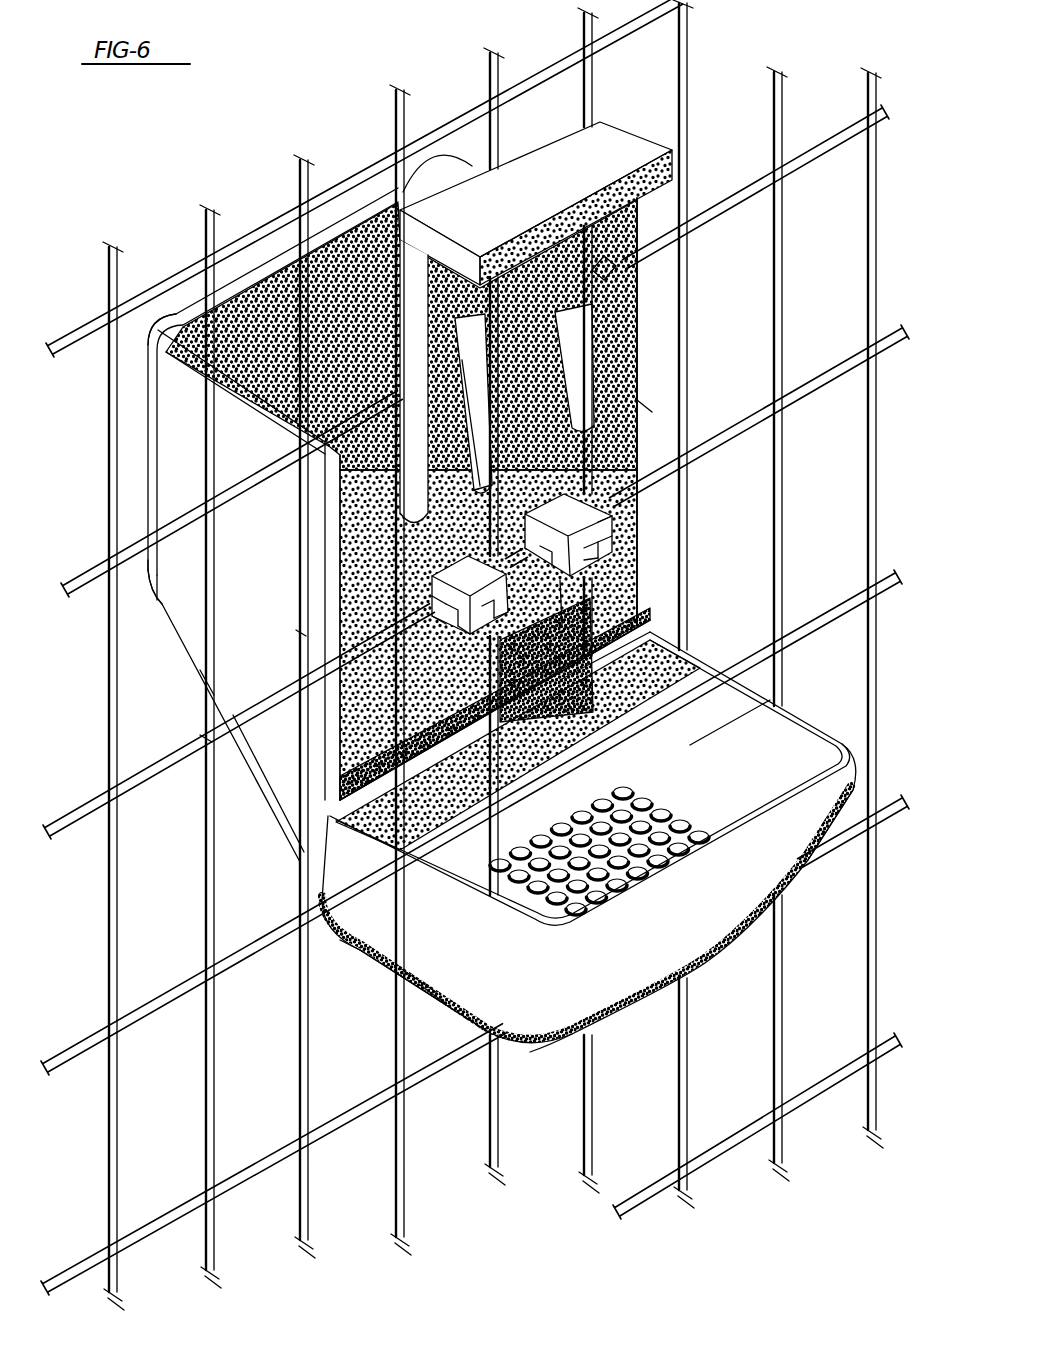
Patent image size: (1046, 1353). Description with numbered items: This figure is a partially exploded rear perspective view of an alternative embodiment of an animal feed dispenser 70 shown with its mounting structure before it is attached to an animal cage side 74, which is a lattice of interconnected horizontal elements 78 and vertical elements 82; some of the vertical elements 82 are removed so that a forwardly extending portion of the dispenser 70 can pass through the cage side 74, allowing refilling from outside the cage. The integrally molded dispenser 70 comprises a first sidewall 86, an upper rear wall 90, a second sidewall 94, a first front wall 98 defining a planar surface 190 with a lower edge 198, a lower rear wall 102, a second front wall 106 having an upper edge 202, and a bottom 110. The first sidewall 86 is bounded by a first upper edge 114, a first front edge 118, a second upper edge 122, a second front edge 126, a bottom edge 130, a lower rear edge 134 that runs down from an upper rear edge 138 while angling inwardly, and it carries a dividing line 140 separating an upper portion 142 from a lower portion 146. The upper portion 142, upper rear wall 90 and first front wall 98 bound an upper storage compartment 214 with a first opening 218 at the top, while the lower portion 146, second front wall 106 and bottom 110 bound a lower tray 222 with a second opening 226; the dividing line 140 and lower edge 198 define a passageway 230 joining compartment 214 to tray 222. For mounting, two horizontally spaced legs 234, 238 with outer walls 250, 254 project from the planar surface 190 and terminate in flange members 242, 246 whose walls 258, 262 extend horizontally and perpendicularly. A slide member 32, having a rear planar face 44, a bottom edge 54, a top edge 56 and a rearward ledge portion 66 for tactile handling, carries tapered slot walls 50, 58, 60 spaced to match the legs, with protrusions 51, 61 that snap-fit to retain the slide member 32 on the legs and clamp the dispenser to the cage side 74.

The slide member 32 is at (386, 184).
The rear planar face 44 is at (532, 382).
The wall 50 is at (452, 578).
The protrusion 51 is at (480, 362).
The bottom edge 54 is at (498, 490).
The top edge 56 is at (488, 180).
The wall 58 is at (576, 500).
The wall 60 is at (590, 335).
The protrusion 61 is at (608, 266).
The ledge portion 66 is at (624, 146).
The animal feed dispenser 70 is at (666, 357).
The animal cage side 74 is at (704, 200).
The horizontal elements 78 is at (82, 336).
The vertical elements 82 is at (580, 14).
The first sidewall 86 is at (287, 768).
The upper rear wall 90 is at (152, 342).
The second sidewall 94 is at (652, 412).
The first front wall 98 is at (316, 634).
The lower rear wall 102 is at (158, 622).
The second front wall 106 is at (722, 938).
The bottom 110 is at (442, 1010).
The first upper edge 114 is at (212, 330).
The first front edge 118 is at (322, 553).
The second upper edge 122 is at (470, 881).
The second front edge 126 is at (560, 1042).
The bottom edge 130 is at (358, 960).
The lower rear edge 134 is at (228, 750).
The upper rear edge 138 is at (130, 544).
The dividing line 140 is at (212, 693).
The upper portion 142 is at (268, 595).
The lower portion 146 is at (496, 965).
The planar surface 190 is at (388, 541).
The lower edge 198 is at (668, 640).
The upper edge 202 is at (820, 757).
The upper storage compartment 214 is at (141, 453).
The first opening 218 is at (260, 262).
The lower tray 222 is at (422, 975).
The second opening 226 is at (716, 720).
The passageway 230 is at (388, 805).
The leg 234 is at (440, 632).
The leg 238 is at (562, 584).
The flange member 242 is at (506, 628).
The flange member 246 is at (612, 556).
The outer wall 250 is at (440, 590).
The outer wall 254 is at (612, 506).
The wall 258 is at (458, 642).
The wall 262 is at (612, 532).